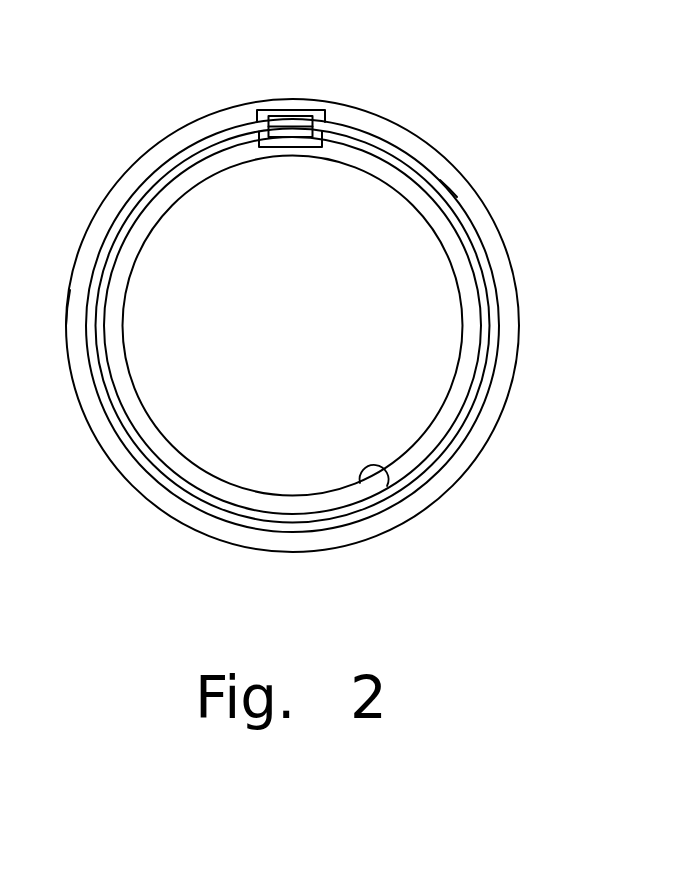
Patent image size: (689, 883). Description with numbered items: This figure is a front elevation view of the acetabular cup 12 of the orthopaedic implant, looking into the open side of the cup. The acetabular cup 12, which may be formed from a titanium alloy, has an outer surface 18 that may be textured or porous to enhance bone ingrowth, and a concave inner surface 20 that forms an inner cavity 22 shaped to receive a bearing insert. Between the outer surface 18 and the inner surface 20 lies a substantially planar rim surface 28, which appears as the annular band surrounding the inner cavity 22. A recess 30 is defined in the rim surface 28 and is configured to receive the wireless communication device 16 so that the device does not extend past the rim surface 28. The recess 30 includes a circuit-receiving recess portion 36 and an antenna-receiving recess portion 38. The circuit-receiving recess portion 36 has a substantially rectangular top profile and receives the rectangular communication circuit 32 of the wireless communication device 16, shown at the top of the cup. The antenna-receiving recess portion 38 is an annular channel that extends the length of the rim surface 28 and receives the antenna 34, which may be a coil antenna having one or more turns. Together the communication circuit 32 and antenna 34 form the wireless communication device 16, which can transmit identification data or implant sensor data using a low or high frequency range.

The acetabular cup 12 is at (417, 77).
The wireless communication device 16 is at (284, 100).
The outer surface 18 is at (440, 498).
The inner surface 20 is at (360, 483).
The inner cavity 22 is at (297, 358).
The rim surface 28 is at (508, 268).
The recess 30 is at (177, 151).
The communication circuit 32 is at (312, 115).
The antenna 34 is at (113, 419).
The circuit-receiving recess portion 36 is at (268, 115).
The antenna-receiving recess portion 38 is at (457, 197).